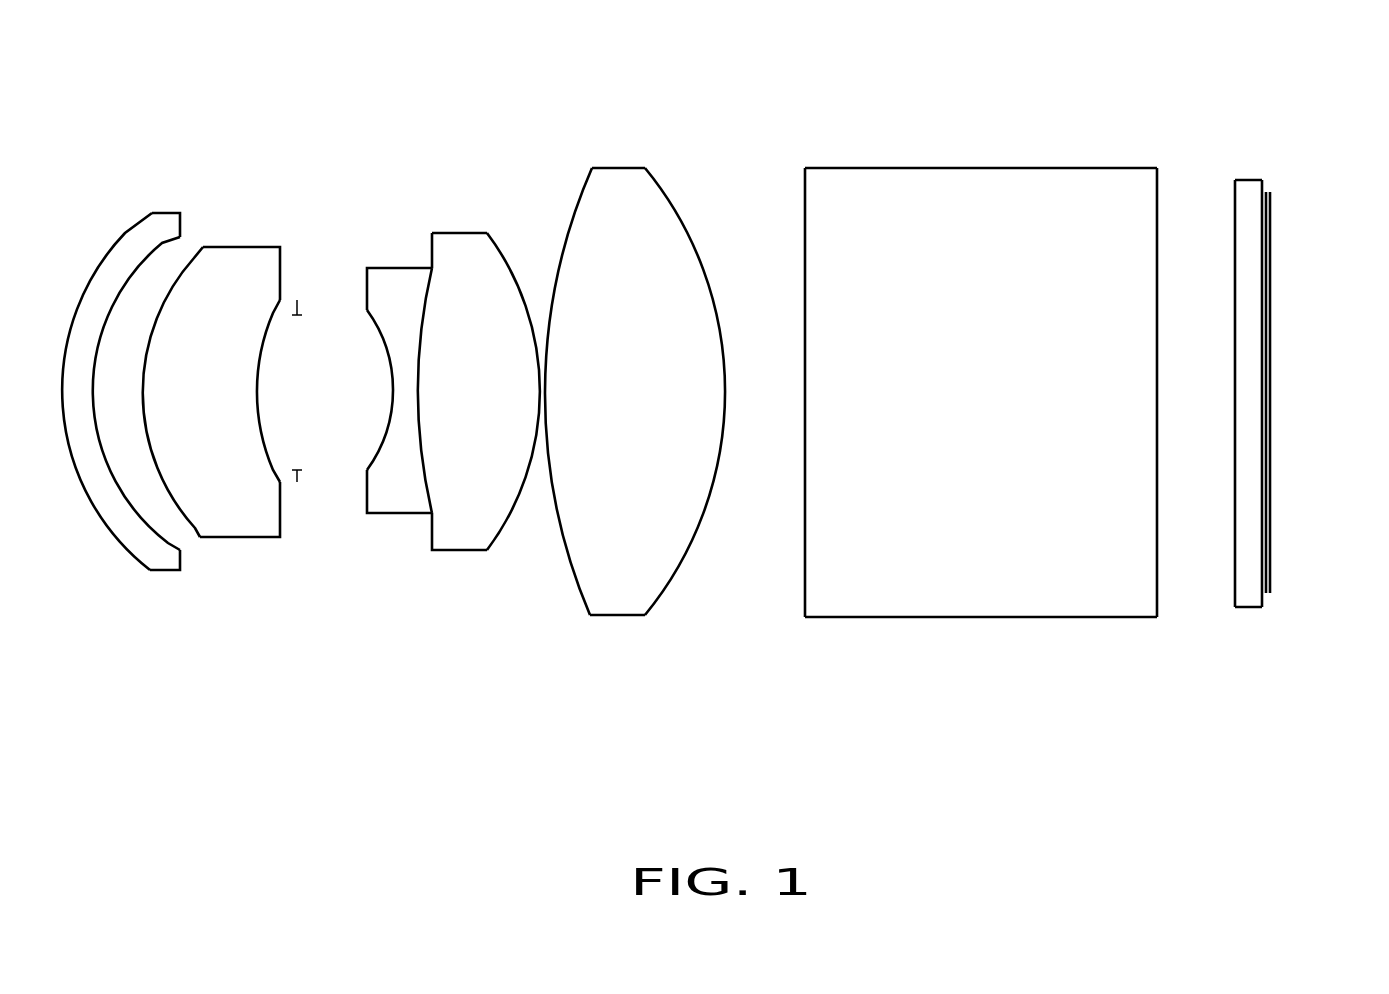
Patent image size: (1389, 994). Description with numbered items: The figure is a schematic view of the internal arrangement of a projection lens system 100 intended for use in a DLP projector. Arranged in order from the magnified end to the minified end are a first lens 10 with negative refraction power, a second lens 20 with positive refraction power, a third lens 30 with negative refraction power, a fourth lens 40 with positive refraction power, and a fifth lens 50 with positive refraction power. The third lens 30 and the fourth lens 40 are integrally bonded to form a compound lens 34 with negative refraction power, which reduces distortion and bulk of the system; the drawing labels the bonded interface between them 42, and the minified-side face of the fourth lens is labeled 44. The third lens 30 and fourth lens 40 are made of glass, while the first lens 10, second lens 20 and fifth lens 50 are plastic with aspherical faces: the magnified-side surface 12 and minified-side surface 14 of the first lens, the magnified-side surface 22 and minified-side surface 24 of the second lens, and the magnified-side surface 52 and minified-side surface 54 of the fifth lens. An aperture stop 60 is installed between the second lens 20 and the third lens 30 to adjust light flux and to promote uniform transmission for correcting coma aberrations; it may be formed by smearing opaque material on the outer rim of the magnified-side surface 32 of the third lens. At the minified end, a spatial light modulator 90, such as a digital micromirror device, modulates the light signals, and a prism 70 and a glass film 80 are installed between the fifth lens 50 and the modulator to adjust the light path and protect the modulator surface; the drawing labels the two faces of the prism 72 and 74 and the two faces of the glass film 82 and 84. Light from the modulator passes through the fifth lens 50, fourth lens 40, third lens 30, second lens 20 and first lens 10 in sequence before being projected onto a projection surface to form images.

The projection lens system 100 is at (507, 77).
The first lens 10 is at (157, 367).
The magnified-side surface 12 is at (128, 233).
The minified-side surface 14 is at (163, 243).
The second lens 20 is at (234, 397).
The magnified-side surface 22 is at (192, 262).
The minified-side surface 24 is at (285, 260).
The third lens 30 is at (378, 431).
The magnified-side surface 32 is at (367, 268).
The compound lens 34 is at (430, 421).
The fourth lens 40 is at (474, 388).
The cemented surface between third and fourth lenses 42 is at (430, 285).
The image-side surface of fourth lens 44 is at (500, 247).
The fifth lens 50 is at (632, 391).
The magnified-side surface 52 is at (582, 193).
The minified-side surface 54 is at (662, 187).
The aperture stop 60 is at (300, 477).
The prism 70 is at (963, 396).
The object-side surface of glass block 72 is at (803, 202).
The image-side surface of glass block 74 is at (1158, 202).
The glass film 80 is at (1292, 388).
The object-side surface of cover glass 82 is at (1235, 200).
The image-side surface of cover glass 84 is at (1266, 190).
The spatial light modulator 90 is at (1268, 580).